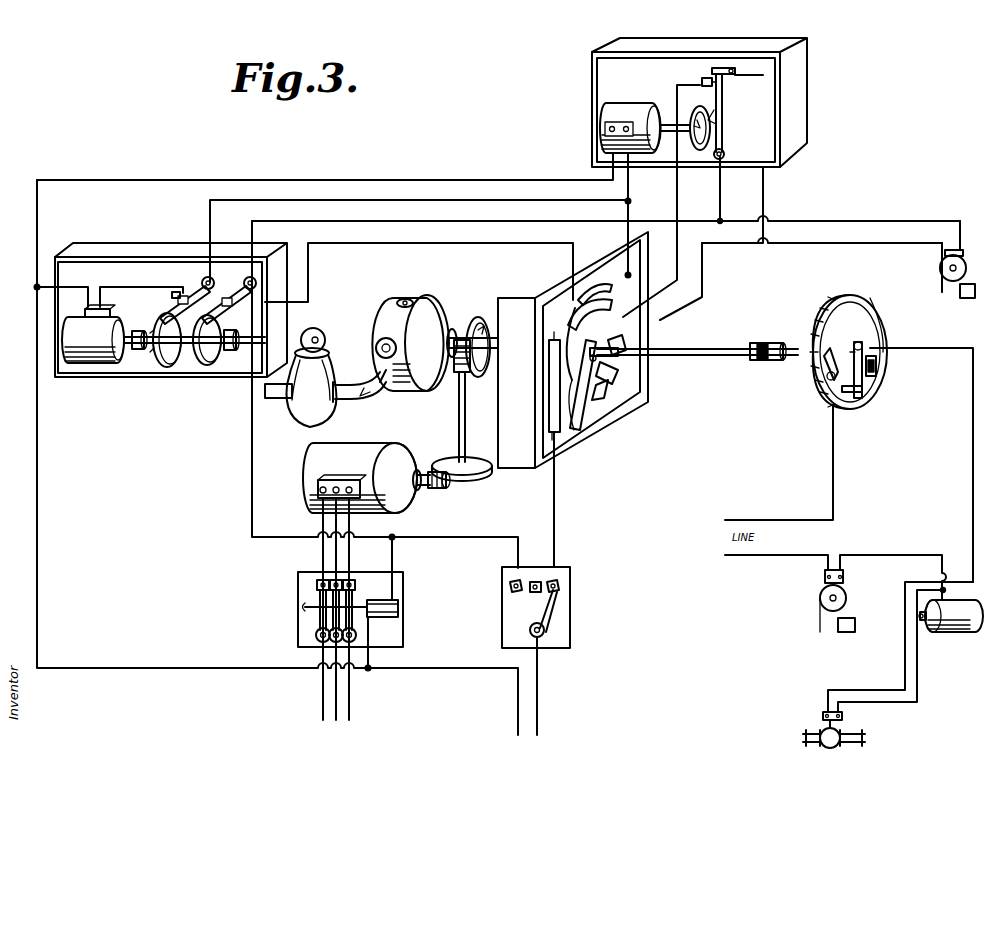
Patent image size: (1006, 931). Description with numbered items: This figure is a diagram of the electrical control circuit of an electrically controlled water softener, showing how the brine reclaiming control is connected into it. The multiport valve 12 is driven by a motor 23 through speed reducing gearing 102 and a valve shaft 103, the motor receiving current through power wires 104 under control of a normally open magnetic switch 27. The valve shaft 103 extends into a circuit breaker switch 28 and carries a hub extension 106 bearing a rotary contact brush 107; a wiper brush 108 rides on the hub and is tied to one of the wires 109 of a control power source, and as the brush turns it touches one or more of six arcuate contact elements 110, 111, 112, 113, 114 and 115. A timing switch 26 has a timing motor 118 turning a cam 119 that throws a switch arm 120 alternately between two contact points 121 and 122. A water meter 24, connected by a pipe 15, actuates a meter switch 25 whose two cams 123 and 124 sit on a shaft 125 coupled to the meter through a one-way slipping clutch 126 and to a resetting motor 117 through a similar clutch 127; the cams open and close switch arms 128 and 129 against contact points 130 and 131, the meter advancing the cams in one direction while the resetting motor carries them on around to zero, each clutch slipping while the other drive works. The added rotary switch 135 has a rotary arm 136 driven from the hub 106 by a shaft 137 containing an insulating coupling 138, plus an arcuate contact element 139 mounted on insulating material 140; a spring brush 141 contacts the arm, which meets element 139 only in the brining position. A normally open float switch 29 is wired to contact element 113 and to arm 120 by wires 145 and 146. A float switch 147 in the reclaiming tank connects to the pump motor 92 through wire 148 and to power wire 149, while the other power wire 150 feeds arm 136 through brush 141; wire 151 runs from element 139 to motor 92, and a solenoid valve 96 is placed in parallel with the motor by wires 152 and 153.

The multiport valve 12 is at (427, 310).
The pipe 15 is at (362, 398).
The motor 23 is at (400, 500).
The water meter 24 is at (290, 412).
The meter switch 25 is at (152, 365).
The timing switch 26 is at (712, 47).
The normally open magnetic switch 27 is at (405, 638).
The circuit breaker switch 28 is at (530, 295).
The float switch 29 is at (963, 250).
The pump motor 92 is at (955, 632).
The solenoid valve 96 is at (830, 745).
The speed reducing gearing 102 is at (458, 440).
The valve shaft 103 is at (480, 378).
The power wires 104 is at (340, 705).
The hub extension 106 is at (554, 340).
The rotary contact brush 107 is at (583, 428).
The wiper brush 108 is at (542, 455).
The wires of a control power source 109 is at (556, 550).
The arcuate contact element 110 is at (574, 435).
The arcuate contact element 111 is at (598, 290).
The arcuate contact element 112 is at (600, 320).
The arcuate contact element 113 is at (612, 356).
The arcuate contact element 114 is at (615, 380).
The arcuate contact element 115 is at (600, 404).
The resetting motor 117 is at (93, 360).
The timing motor 118 is at (628, 110).
The cam 119 is at (702, 152).
The switch arm 120 is at (722, 135).
The contact point 121 is at (705, 78).
The contact point 122 is at (732, 68).
The cam 123 is at (170, 367).
The cam 124 is at (206, 365).
The shaft 125 is at (190, 346).
The one-way drive slipping clutch 126 is at (232, 352).
The clutch 127 is at (136, 350).
The switch arm 128 is at (170, 312).
The switch arm 129 is at (227, 282).
The contact point 130 is at (176, 292).
The contact point 131 is at (235, 302).
The rotary switch 135 is at (855, 305).
The rotary arm 136 is at (862, 392).
The shaft 137 is at (733, 349).
The insulating coupling 138 is at (770, 342).
The arcuate contact element 139 is at (870, 345).
The insulating material 140 is at (876, 366).
The spring brush 141 is at (826, 376).
The wire 145 is at (870, 243).
The wire 146 is at (720, 221).
The float switch 147 is at (846, 596).
The wire 148 is at (897, 555).
The power wire 149 is at (775, 555).
The power wire 150 is at (830, 480).
The wire 151 is at (962, 348).
The wire 152 is at (870, 690).
The wire 153 is at (905, 705).